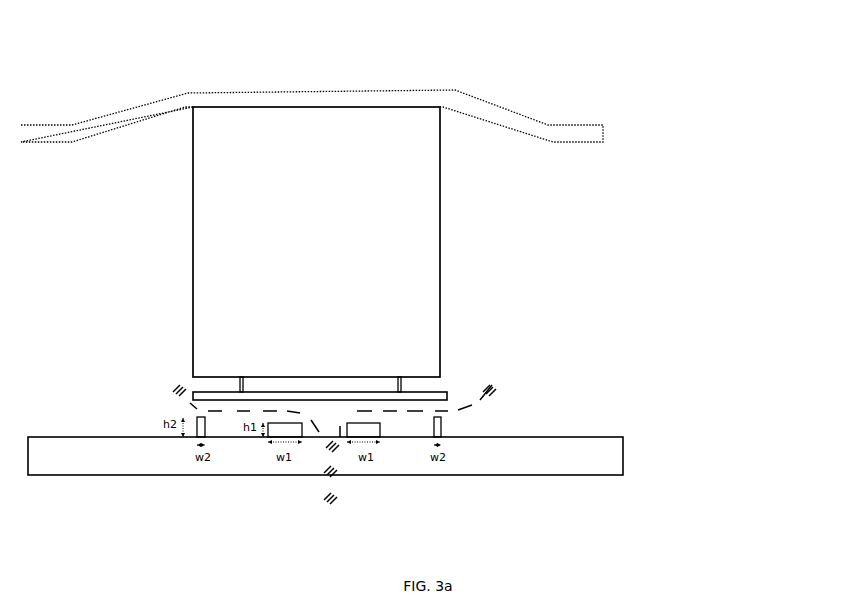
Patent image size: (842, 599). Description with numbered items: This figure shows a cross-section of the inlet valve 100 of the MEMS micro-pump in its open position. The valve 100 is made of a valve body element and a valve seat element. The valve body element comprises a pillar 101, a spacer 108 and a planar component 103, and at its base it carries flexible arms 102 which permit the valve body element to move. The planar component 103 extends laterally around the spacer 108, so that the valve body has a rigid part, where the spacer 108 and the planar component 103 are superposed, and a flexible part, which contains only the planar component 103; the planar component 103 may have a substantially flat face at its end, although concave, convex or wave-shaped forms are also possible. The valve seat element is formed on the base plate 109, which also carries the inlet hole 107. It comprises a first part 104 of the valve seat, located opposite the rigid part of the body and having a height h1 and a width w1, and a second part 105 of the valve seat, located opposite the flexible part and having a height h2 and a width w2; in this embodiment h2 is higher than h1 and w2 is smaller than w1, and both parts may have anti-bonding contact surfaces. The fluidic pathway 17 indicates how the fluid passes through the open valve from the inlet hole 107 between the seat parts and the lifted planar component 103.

The valve 100 is at (708, 75).
The pillar 101 is at (410, 245).
The flexible arms 102 is at (190, 96).
The planar component 103 is at (450, 392).
The first part of the valve seat 104 is at (302, 438).
The second part of the valve seat 105 is at (196, 416).
The inlet hole 107 is at (315, 478).
The spacer 108 is at (250, 378).
The base plate 109 is at (466, 458).
The fluidic pathway 17 is at (497, 387).